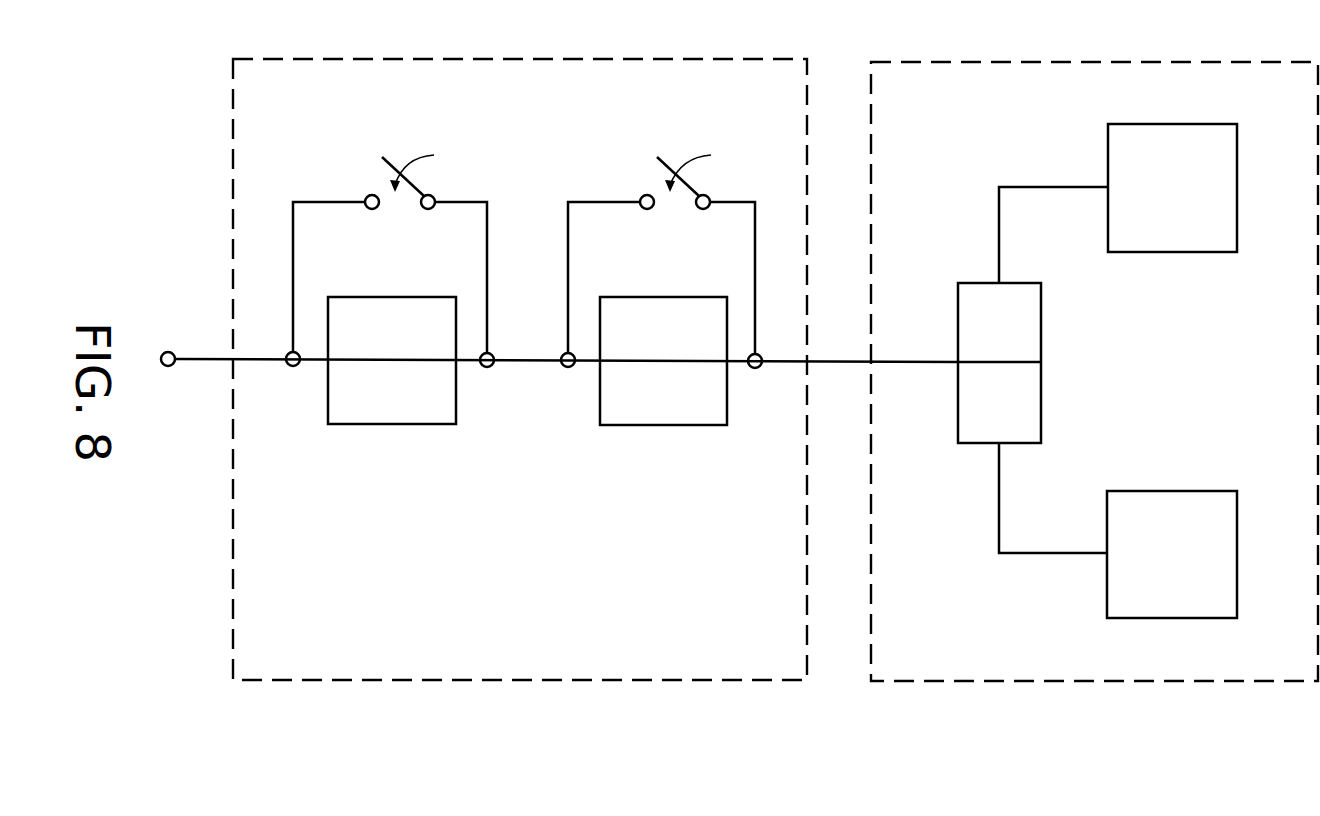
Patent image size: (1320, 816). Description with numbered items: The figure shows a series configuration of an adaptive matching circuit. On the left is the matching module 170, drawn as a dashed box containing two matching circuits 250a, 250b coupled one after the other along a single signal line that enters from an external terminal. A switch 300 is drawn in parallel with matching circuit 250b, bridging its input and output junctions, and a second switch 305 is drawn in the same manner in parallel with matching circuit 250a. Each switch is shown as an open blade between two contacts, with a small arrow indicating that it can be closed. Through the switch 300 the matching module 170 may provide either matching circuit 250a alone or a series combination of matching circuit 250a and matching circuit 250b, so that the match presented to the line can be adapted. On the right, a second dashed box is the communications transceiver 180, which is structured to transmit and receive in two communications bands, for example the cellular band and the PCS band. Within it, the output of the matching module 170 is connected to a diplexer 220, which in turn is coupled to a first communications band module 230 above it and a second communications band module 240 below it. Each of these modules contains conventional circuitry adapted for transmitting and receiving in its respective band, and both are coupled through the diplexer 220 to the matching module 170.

The matching module 170 is at (792, 667).
The communications transceiver 180 is at (1302, 668).
The diplexer 220 is at (1041, 410).
The first communications band module 230 is at (1198, 207).
The second communications band module 240 is at (1198, 575).
The matching circuit 250a is at (427, 378).
The matching circuit 250b is at (698, 378).
The switch 300 is at (668, 130).
The bypass switch 305 is at (387, 135).